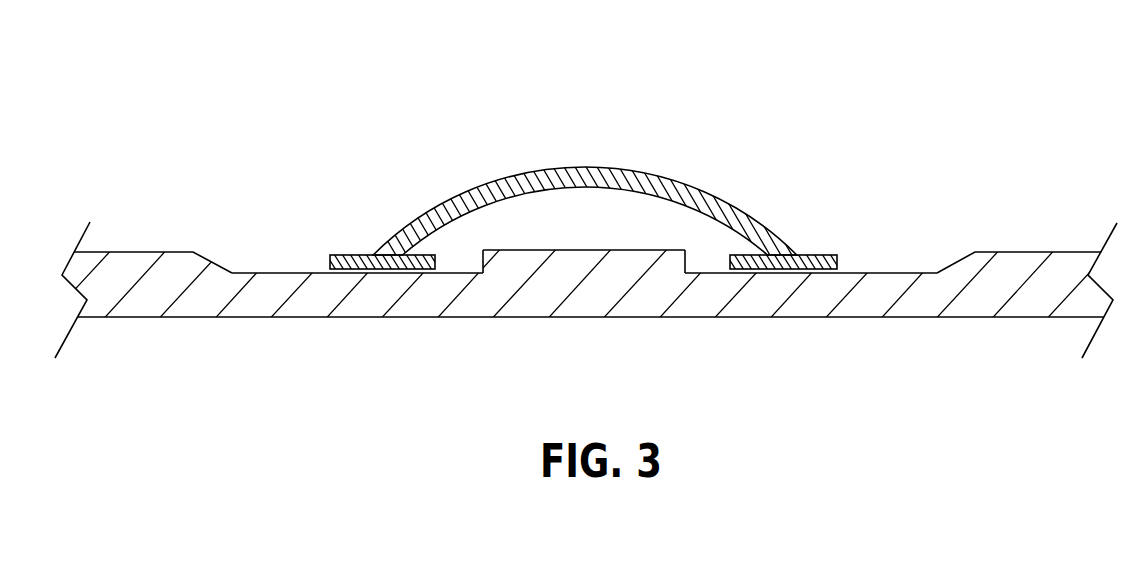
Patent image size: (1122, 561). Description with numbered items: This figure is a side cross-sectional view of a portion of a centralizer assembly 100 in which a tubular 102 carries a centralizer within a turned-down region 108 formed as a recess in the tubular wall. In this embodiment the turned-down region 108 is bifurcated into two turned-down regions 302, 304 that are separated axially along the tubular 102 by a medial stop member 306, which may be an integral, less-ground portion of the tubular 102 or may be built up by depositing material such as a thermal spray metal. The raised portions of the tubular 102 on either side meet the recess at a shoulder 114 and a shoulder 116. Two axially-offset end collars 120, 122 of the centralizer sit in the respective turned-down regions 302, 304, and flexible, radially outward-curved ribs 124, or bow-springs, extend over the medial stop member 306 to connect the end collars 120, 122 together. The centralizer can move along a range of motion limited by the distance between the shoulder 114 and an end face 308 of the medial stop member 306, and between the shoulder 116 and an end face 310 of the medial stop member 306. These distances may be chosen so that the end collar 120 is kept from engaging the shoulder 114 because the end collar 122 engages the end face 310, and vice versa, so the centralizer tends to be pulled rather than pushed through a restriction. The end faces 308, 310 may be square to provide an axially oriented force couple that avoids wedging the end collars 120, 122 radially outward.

The centralizer assembly 100 is at (182, 64).
The tubular 102 is at (975, 300).
The turned-down region 108 is at (251, 195).
The shoulder 114 is at (213, 258).
The shoulder 116 is at (957, 260).
The end collar 120 is at (350, 253).
The end collar 122 is at (807, 252).
The ribs 124 is at (602, 168).
The turned-down region 302 is at (281, 245).
The turned-down region 304 is at (885, 215).
The medial stop member 306 is at (547, 250).
The end face 308 is at (482, 268).
The end face 310 is at (696, 265).